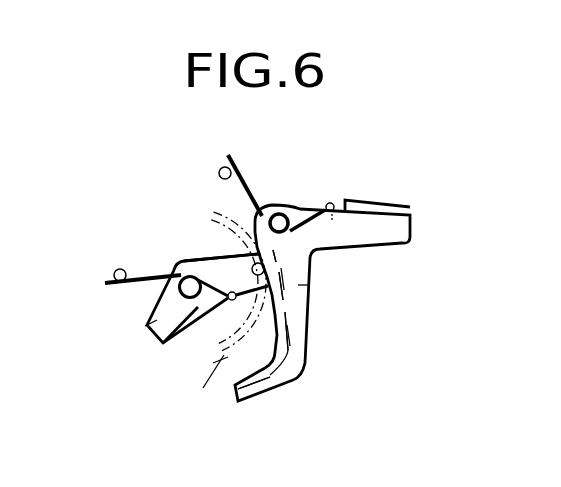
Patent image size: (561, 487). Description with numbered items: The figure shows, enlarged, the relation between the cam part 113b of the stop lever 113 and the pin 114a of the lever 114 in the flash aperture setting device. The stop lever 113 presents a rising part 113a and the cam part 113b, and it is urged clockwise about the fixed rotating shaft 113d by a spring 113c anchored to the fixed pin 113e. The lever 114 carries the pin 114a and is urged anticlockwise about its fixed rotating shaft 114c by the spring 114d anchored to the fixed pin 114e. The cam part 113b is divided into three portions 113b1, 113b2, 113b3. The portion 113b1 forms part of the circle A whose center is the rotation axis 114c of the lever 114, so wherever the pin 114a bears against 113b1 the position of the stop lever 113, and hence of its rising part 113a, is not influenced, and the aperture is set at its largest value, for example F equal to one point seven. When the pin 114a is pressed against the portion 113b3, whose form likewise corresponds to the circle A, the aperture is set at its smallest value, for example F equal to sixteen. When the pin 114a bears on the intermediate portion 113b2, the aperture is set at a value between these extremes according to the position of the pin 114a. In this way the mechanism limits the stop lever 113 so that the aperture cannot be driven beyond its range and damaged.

The stop lever 113 is at (407, 245).
The rising part 113a is at (390, 203).
The cam part 113b is at (298, 285).
The cam part portion 113b1 is at (275, 262).
The cam part portion 113b2 is at (288, 318).
The cam part portion 113b3 is at (265, 382).
The spring 113c is at (253, 200).
The fixed rotating shaft 113d is at (288, 217).
The fixed pin 113e is at (221, 167).
The lever 114 is at (143, 328).
The pin 114a is at (255, 256).
The fixed rotating shaft 114c is at (193, 307).
The spring 114d is at (147, 276).
The fixed pin 114e is at (113, 272).
The circle A is at (210, 380).